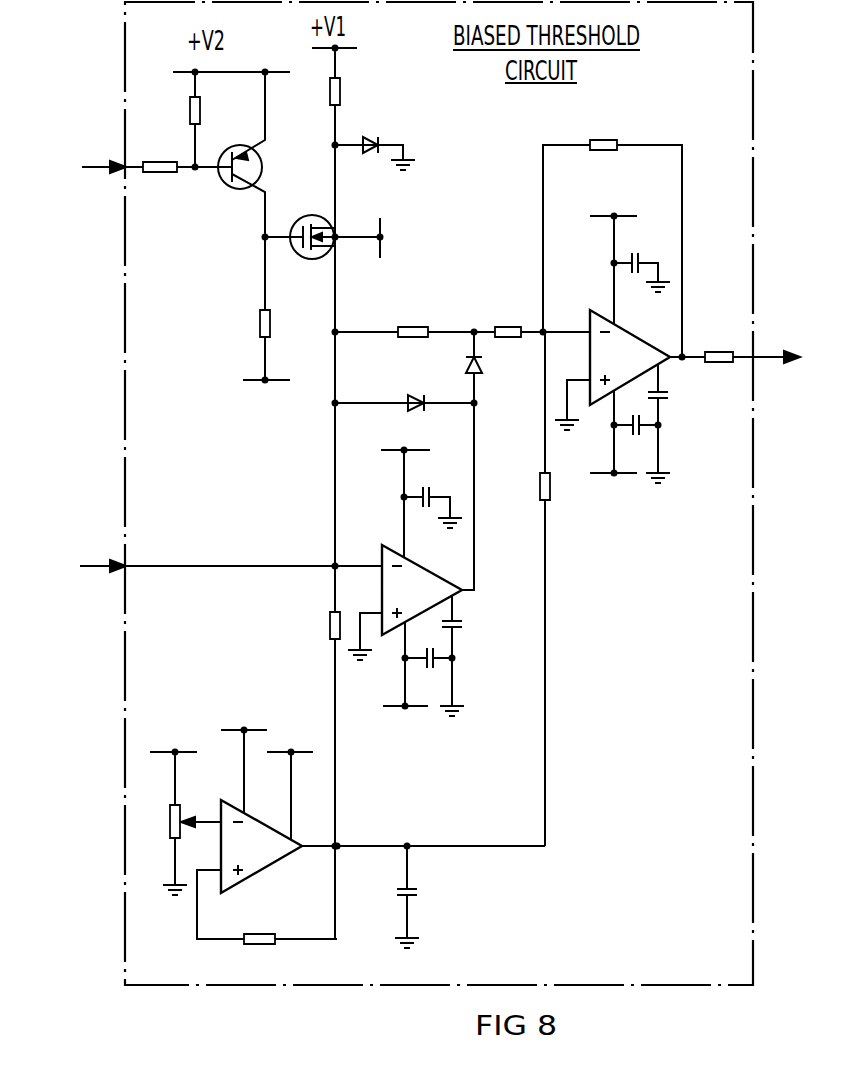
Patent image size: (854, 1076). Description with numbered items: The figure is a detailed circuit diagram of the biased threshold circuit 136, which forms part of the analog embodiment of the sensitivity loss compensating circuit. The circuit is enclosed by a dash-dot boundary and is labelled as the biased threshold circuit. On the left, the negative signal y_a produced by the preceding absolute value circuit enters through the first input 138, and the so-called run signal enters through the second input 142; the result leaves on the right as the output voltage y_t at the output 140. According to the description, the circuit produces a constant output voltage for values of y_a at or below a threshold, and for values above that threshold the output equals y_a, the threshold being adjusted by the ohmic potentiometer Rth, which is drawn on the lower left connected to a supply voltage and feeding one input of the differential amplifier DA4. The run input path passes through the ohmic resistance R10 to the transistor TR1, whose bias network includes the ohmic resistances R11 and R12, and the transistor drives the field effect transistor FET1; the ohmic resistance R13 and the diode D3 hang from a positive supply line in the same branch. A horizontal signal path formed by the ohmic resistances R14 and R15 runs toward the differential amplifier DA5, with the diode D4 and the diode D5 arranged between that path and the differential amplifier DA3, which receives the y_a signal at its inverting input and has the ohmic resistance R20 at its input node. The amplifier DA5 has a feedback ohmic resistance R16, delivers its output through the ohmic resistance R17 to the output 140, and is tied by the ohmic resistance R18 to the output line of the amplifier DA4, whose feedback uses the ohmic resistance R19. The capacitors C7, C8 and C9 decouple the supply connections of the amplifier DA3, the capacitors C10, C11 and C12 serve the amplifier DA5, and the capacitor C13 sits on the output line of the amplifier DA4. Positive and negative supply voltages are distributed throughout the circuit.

The biased threshold circuit 136 is at (753, 133).
The first input 138 is at (122, 572).
The output 140 is at (755, 360).
The second input 142 is at (122, 172).
The ohmic resistance R10 is at (160, 172).
The ohmic resistance R11 is at (200, 120).
The ohmic resistance R12 is at (258, 330).
The ohmic resistance R13 is at (340, 98).
The ohmic resistance R14 is at (415, 327).
The ohmic resistance R15 is at (508, 327).
The ohmic resistance R16 is at (610, 150).
The ohmic resistance R17 is at (716, 352).
The ohmic resistance R18 is at (540, 498).
The ohmic resistance R19 is at (265, 945).
The ohmic resistance R20 is at (328, 625).
The ohmic potentiometer Rth is at (180, 812).
The capacitor C7 is at (424, 482).
The capacitor C8 is at (459, 627).
The capacitor C9 is at (436, 663).
The capacitor C10 is at (626, 258).
The capacitor C11 is at (664, 398).
The capacitor C12 is at (641, 430).
The capacitor C13 is at (414, 900).
The diode D3 is at (370, 140).
The diode D4 is at (480, 368).
The diode D5 is at (405, 398).
The transistor TR1 is at (262, 167).
The field effect transistor FET1 is at (300, 258).
The differential amplifier DA3 is at (382, 548).
The differential amplifier DA4 is at (265, 866).
The differential amplifier DA5 is at (590, 360).